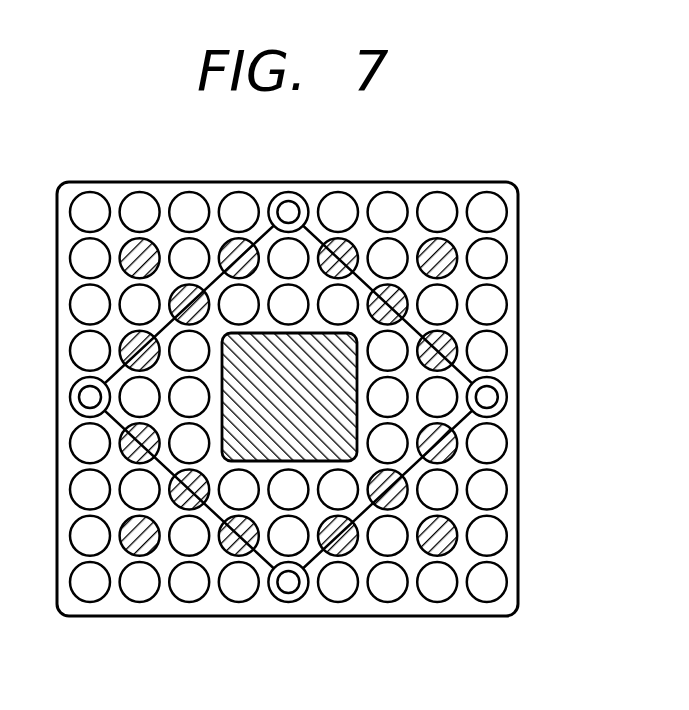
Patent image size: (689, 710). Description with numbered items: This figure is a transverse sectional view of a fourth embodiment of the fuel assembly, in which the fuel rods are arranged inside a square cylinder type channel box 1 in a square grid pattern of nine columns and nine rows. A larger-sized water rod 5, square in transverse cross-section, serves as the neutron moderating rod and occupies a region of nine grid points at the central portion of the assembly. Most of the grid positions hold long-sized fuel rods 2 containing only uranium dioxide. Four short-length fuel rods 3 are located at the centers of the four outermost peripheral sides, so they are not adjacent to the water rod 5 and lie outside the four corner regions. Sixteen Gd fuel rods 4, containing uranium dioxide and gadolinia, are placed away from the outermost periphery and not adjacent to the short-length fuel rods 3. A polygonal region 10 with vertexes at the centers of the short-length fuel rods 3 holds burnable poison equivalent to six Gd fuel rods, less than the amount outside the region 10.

The channel box 1 is at (518, 219).
The fuel rod 2 is at (483, 305).
The short-length fuel rod 3 is at (482, 402).
The burnable poison containing fuel rod 4 is at (440, 450).
The water rod 5 is at (253, 460).
The region 10 is at (313, 198).